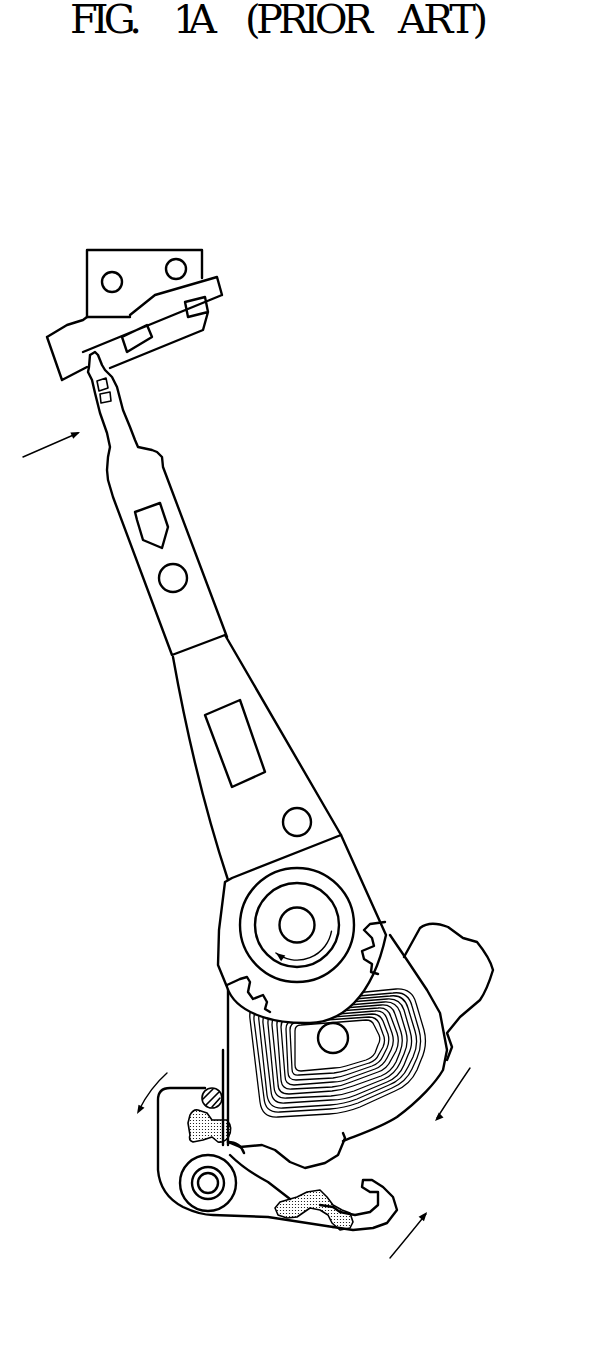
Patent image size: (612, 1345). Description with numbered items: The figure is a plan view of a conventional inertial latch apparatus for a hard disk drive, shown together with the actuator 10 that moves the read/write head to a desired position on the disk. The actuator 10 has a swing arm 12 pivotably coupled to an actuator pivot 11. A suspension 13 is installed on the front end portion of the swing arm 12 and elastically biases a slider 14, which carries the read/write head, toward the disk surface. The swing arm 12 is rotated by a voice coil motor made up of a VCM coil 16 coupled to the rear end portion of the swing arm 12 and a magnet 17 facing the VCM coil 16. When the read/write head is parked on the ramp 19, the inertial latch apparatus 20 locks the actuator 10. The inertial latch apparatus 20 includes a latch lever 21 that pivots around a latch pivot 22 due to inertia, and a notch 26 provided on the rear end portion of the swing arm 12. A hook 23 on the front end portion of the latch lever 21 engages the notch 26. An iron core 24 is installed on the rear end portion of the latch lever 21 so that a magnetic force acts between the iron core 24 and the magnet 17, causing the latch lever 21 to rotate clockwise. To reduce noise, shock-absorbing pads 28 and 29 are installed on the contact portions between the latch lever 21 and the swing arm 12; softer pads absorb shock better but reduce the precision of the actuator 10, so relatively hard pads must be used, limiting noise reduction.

The actuator 10 is at (352, 760).
The actuator pivot 11 is at (305, 918).
The swing arm 12 is at (277, 738).
The suspension 13 is at (155, 472).
The slider 14 is at (107, 397).
The VCM coil 16 is at (423, 1048).
The magnet 17 is at (458, 950).
The ramp 19 is at (143, 260).
The inertial latch apparatus 20 is at (229, 1236).
The latch lever 21 is at (267, 1217).
The latch pivot 22 is at (208, 1185).
The hook 23 is at (397, 1193).
The iron core 24 is at (210, 1090).
The notch 26 is at (343, 1152).
The shock-absorbing pad 28 is at (190, 1128).
The shock-absorbing pad 29 is at (330, 1225).